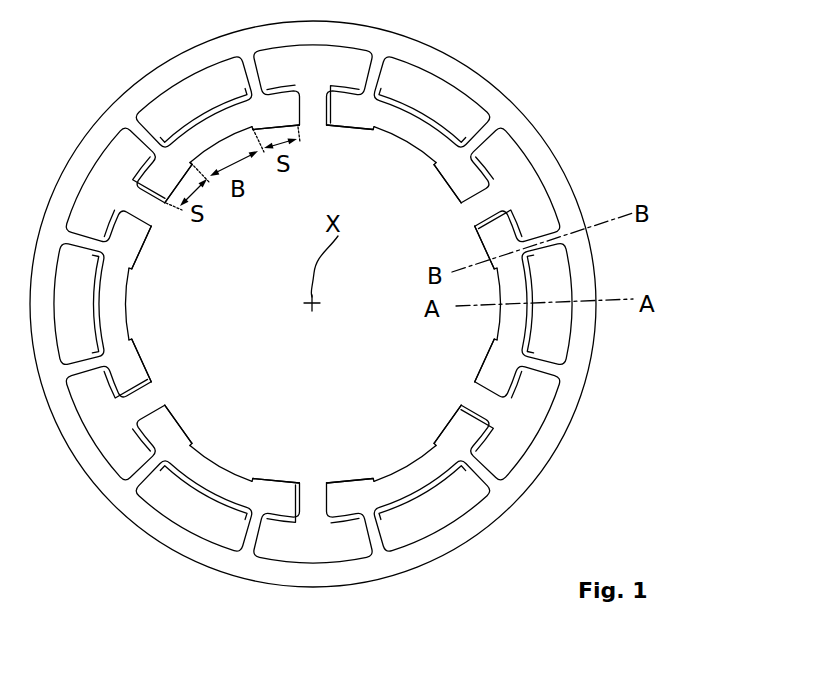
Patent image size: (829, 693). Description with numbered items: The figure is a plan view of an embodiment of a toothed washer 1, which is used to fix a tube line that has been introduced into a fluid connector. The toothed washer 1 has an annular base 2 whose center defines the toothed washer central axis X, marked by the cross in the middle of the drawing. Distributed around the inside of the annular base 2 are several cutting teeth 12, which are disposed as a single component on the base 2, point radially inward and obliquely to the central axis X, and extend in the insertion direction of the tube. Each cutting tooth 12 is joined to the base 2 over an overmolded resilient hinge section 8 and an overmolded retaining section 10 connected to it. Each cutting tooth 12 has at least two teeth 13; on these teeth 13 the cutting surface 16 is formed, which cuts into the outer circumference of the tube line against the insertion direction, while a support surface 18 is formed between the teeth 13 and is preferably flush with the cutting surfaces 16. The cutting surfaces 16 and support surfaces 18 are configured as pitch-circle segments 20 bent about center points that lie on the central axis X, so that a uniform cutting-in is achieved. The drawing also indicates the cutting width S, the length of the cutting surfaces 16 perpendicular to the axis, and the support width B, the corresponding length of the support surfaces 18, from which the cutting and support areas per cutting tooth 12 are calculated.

The toothed washer 1 is at (382, 331).
The annular base 2 is at (561, 423).
The resilient hinge section 8 is at (386, 554).
The retaining section 10 is at (483, 473).
The cutting teeth 12 is at (420, 472).
The teeth 13 is at (470, 421).
The cutting surface 16 is at (197, 419).
The support surface 18 is at (232, 457).
The pitch-circle segments 20 is at (290, 449).